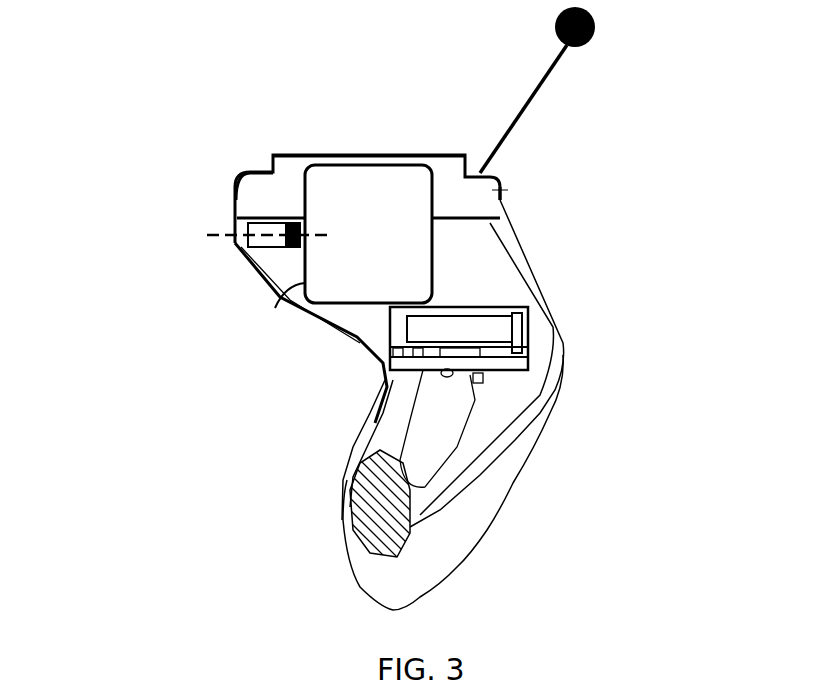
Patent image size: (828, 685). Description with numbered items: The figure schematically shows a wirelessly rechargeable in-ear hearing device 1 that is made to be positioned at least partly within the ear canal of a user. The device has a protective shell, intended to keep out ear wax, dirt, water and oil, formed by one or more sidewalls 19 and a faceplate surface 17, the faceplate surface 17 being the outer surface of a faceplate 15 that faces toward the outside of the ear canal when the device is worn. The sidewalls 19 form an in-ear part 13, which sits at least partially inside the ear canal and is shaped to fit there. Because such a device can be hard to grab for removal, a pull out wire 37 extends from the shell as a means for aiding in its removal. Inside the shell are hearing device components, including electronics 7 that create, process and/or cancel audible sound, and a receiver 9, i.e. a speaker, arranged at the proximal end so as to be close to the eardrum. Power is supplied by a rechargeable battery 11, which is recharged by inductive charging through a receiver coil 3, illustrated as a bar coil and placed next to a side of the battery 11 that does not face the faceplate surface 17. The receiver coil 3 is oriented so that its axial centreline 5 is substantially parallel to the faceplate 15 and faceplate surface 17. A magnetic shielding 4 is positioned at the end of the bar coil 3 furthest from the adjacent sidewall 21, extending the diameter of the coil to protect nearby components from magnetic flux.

The in-ear hearing device 1 is at (147, 98).
The receiver coil 3 is at (245, 268).
The magnetic shielding 4 is at (293, 217).
The axial centreline 5 is at (227, 233).
The electronics 7 is at (463, 310).
The receiver 9 is at (450, 440).
The rechargeable battery 11 is at (275, 308).
The in-ear part 13 is at (565, 310).
The faceplate 15 is at (255, 185).
The faceplate surface 17 is at (390, 152).
The sidewalls 19 is at (502, 197).
The adjacent sidewall 21 is at (235, 243).
The pull out wire 37 is at (533, 98).